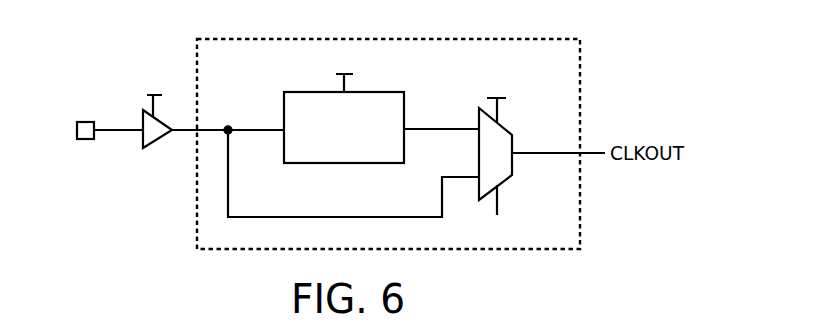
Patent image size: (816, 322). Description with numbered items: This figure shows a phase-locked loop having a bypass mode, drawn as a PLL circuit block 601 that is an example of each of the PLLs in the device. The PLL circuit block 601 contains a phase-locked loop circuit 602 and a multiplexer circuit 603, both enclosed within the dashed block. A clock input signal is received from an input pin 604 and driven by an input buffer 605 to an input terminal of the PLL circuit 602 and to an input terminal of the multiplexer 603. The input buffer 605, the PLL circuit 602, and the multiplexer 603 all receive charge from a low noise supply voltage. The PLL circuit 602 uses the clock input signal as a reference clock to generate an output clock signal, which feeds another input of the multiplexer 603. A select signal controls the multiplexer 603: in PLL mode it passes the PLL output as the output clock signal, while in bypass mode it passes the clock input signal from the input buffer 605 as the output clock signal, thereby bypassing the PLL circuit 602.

The PLL circuit block 601 is at (518, 39).
The phase-locked loop circuit 602 is at (382, 92).
The multiplexer circuit 603 is at (507, 177).
The input pin 604 is at (87, 140).
The input buffer 605 is at (158, 143).